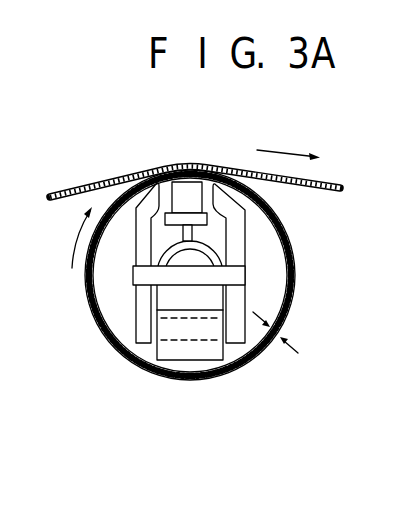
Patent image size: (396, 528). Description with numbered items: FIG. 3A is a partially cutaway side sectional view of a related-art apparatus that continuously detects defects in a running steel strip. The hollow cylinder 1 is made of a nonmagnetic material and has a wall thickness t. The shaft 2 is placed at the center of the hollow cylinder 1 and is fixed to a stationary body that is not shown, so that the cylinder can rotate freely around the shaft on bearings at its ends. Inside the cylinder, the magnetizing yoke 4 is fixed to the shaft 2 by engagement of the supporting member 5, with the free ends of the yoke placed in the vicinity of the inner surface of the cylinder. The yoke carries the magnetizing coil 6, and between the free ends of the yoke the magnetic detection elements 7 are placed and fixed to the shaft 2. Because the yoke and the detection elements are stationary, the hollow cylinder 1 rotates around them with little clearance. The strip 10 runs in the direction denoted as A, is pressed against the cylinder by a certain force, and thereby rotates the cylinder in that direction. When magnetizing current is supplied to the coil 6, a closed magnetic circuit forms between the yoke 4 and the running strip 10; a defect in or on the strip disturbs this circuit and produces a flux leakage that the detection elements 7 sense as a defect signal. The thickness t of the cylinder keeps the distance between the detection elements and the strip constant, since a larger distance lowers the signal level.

The hollow cylinder 1 is at (288, 236).
The shaft 2 is at (224, 294).
The magnetizing yoke 4 is at (149, 314).
The supporting member 5 is at (133, 273).
The magnetizing coil 6 is at (195, 347).
The magnetic detection elements 7 is at (183, 192).
The strip 10 is at (89, 185).
The running direction A is at (257, 150).
The thickness t is at (281, 343).